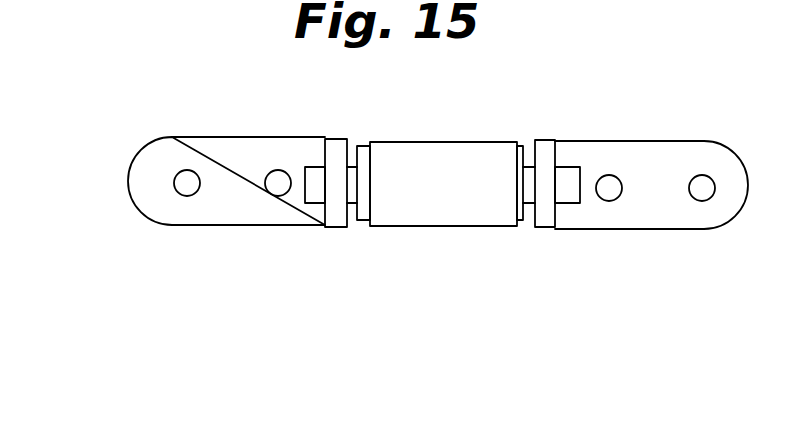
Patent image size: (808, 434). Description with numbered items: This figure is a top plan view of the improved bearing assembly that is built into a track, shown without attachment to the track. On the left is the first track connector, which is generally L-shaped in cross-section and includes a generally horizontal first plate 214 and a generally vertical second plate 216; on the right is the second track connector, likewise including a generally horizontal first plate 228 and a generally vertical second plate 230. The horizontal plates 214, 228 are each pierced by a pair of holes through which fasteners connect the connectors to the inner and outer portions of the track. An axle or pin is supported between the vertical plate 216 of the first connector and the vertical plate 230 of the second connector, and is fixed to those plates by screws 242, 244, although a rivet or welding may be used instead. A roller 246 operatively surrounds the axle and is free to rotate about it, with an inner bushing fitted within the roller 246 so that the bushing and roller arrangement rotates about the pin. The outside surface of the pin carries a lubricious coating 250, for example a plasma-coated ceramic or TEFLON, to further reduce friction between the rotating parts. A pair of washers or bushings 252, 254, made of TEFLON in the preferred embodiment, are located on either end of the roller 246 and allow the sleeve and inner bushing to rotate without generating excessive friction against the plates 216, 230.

The first plate 214 is at (158, 210).
The second plate 216 is at (338, 138).
The first plate 228 is at (722, 205).
The second plate 230 is at (548, 145).
The screw 242 is at (313, 200).
The screw 244 is at (572, 203).
The roller 246 is at (443, 141).
The lubricious coating 250 is at (530, 143).
The washer or bushing 252 is at (360, 222).
The washer or bushing 254 is at (520, 222).